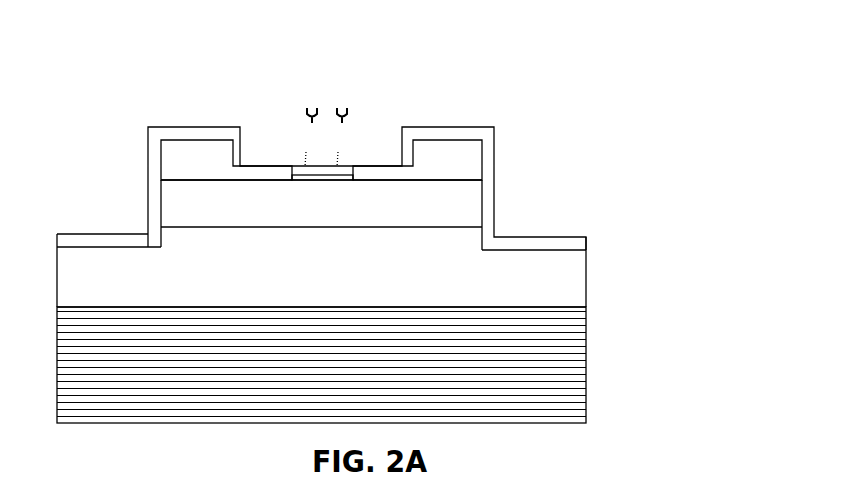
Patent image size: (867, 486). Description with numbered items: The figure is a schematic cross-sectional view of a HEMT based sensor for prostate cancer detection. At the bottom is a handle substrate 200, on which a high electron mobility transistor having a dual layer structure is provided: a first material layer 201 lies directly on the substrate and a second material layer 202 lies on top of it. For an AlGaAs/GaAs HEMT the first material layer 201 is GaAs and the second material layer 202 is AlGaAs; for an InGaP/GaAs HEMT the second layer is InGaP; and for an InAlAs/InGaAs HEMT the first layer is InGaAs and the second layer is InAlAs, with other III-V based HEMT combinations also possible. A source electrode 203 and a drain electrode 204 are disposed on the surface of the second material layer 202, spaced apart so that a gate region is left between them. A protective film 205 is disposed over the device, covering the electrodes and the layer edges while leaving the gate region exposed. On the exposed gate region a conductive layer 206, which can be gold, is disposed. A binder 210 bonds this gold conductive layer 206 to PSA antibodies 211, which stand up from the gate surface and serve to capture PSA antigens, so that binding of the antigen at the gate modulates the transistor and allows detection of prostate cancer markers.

The handle substrate 200 is at (523, 373).
The first material layer 201 is at (538, 281).
The second material layer 202 is at (425, 204).
The source electrode 203 is at (190, 162).
The drain electrode 204 is at (450, 164).
The passivation layer 205 is at (468, 132).
The conductive layer 206 is at (344, 176).
The binder 210 is at (290, 146).
The PSA antibodies 211 is at (311, 106).